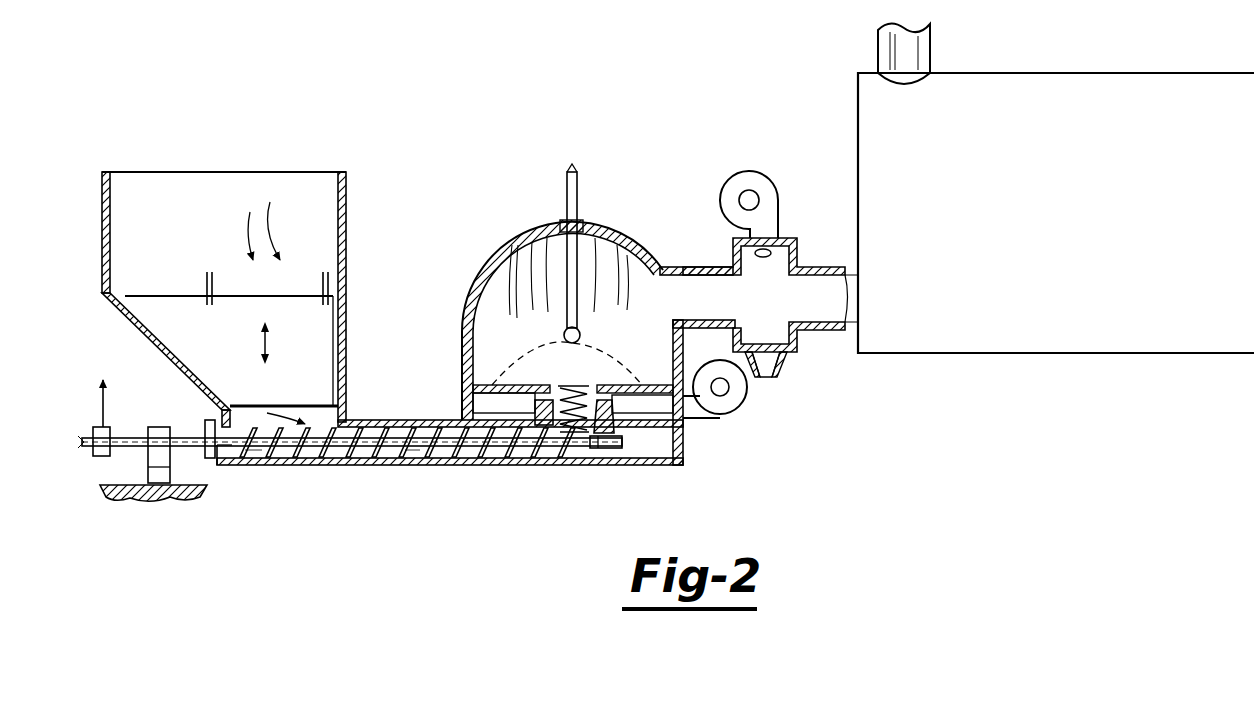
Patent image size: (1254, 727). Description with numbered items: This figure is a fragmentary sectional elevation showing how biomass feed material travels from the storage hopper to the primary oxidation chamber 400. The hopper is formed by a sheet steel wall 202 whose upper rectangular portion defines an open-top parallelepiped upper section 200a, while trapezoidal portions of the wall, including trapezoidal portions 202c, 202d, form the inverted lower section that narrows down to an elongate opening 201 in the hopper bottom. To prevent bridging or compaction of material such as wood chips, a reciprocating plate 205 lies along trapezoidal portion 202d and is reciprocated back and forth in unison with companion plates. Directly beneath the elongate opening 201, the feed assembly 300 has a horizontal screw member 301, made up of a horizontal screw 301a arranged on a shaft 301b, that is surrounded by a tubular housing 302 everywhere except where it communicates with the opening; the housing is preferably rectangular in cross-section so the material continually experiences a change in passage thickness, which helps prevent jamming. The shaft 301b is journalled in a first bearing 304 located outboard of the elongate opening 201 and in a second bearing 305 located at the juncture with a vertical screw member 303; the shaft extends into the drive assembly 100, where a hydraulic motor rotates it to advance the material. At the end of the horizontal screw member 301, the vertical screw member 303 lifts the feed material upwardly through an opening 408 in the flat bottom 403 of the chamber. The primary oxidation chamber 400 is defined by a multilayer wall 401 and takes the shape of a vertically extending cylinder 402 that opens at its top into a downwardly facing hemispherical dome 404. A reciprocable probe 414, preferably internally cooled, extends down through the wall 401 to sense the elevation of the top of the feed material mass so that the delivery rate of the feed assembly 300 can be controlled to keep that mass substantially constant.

The drive assembly 100 is at (1128, 55).
The upper section 200a is at (205, 250).
The elongate opening 201 is at (250, 464).
The wall 202 is at (102, 228).
The trapezoidal portion 202c is at (140, 338).
The trapezoidal portion 202d is at (348, 343).
The reciprocating plate 205 is at (245, 345).
The feed assembly 300 is at (370, 484).
The horizontal screw member 301 is at (318, 462).
The horizontal screw 301a is at (415, 467).
The shaft 301b is at (272, 464).
The tubular housing 302 is at (392, 467).
The vertical screw member 303 is at (622, 382).
The first bearing 304 is at (222, 420).
The second bearing 305 is at (617, 448).
The primary oxidation chamber 400 is at (612, 213).
The wall 401 is at (505, 240).
The vertically extending cylinder 402 is at (540, 353).
The flat bottom 403 is at (650, 425).
The hemispherical dome 404 is at (560, 296).
The opening 408 is at (625, 440).
The reciprocable probe 414 is at (578, 182).